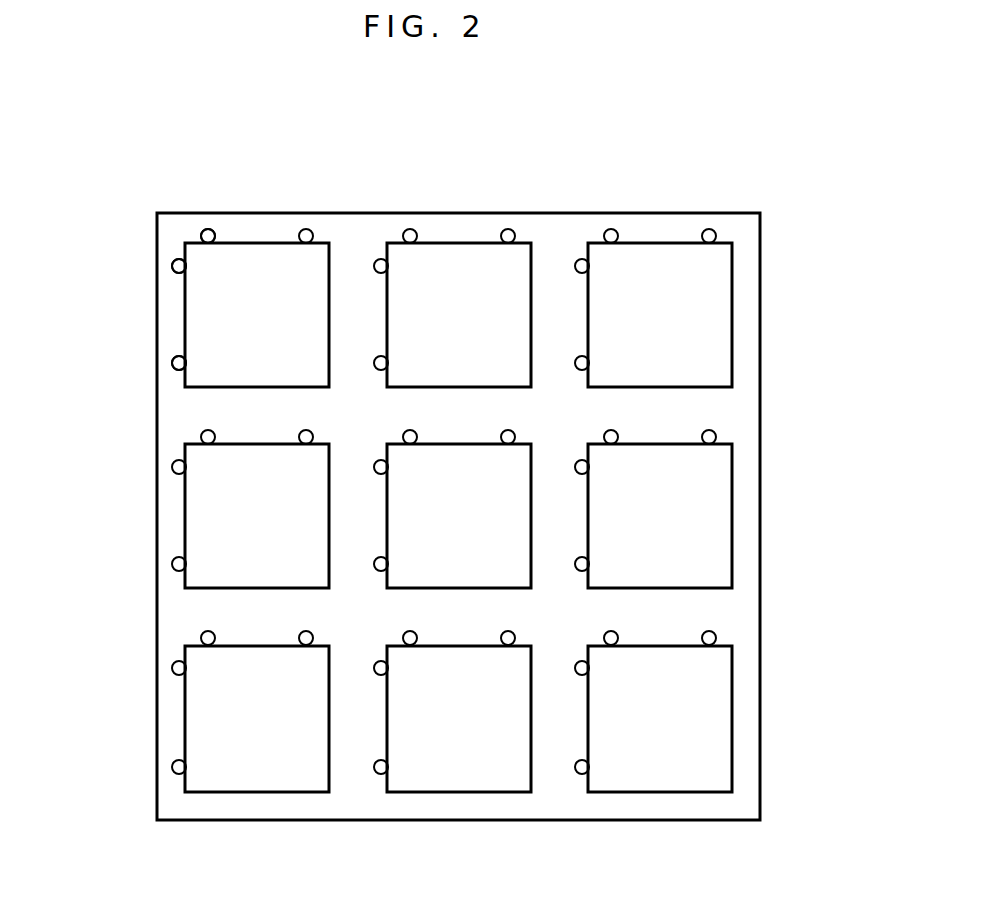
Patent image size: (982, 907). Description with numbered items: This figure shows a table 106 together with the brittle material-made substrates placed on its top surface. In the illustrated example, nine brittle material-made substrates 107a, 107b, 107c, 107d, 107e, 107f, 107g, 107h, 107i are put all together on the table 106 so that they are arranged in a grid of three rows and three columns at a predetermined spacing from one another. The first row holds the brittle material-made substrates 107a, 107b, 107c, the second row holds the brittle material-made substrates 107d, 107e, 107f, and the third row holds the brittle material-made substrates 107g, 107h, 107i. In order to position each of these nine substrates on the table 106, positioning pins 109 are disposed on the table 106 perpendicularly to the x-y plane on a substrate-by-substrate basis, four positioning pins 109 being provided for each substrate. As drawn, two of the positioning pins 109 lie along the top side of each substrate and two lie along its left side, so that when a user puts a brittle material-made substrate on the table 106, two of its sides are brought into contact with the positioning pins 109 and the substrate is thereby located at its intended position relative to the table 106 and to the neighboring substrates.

The table 106 is at (155, 413).
The brittle material-made substrate 107a is at (247, 242).
The brittle material-made substrate 107b is at (448, 242).
The brittle material-made substrate 107c is at (650, 242).
The brittle material-made substrate 107d is at (183, 530).
The brittle material-made substrate 107e is at (533, 443).
The brittle material-made substrate 107f is at (732, 503).
The brittle material-made substrate 107g is at (248, 793).
The brittle material-made substrate 107h is at (448, 793).
The brittle material-made substrate 107i is at (648, 793).
The positioning pin 109 is at (173, 360).